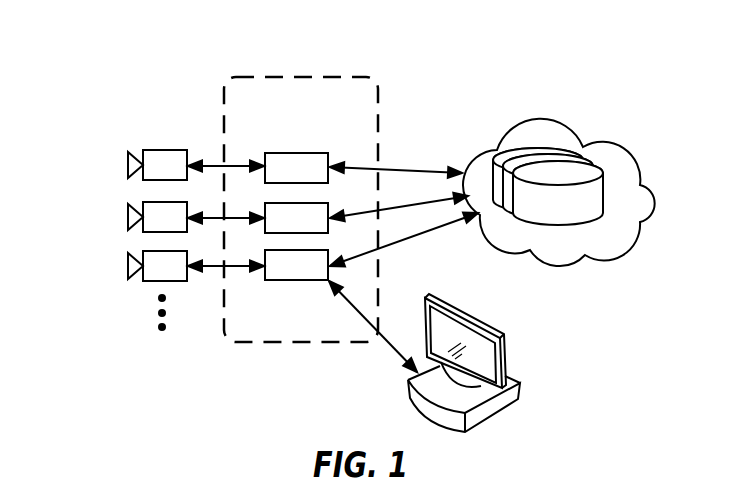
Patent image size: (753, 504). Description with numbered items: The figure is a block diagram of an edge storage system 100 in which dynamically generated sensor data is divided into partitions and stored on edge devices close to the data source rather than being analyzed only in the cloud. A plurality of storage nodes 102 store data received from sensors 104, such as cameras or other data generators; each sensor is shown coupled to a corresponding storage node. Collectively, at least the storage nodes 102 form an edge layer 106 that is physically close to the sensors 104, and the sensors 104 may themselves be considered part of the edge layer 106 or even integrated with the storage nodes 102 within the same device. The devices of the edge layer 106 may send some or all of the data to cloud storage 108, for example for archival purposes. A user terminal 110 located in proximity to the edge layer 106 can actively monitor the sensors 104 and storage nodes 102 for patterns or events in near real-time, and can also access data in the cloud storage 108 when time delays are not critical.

The edge storage system 100 is at (95, 79).
The storage nodes 102 is at (300, 153).
The sensors 104 is at (128, 267).
The edge layer 106 is at (283, 76).
The cloud storage 108 is at (537, 118).
The user terminal 110 is at (484, 322).